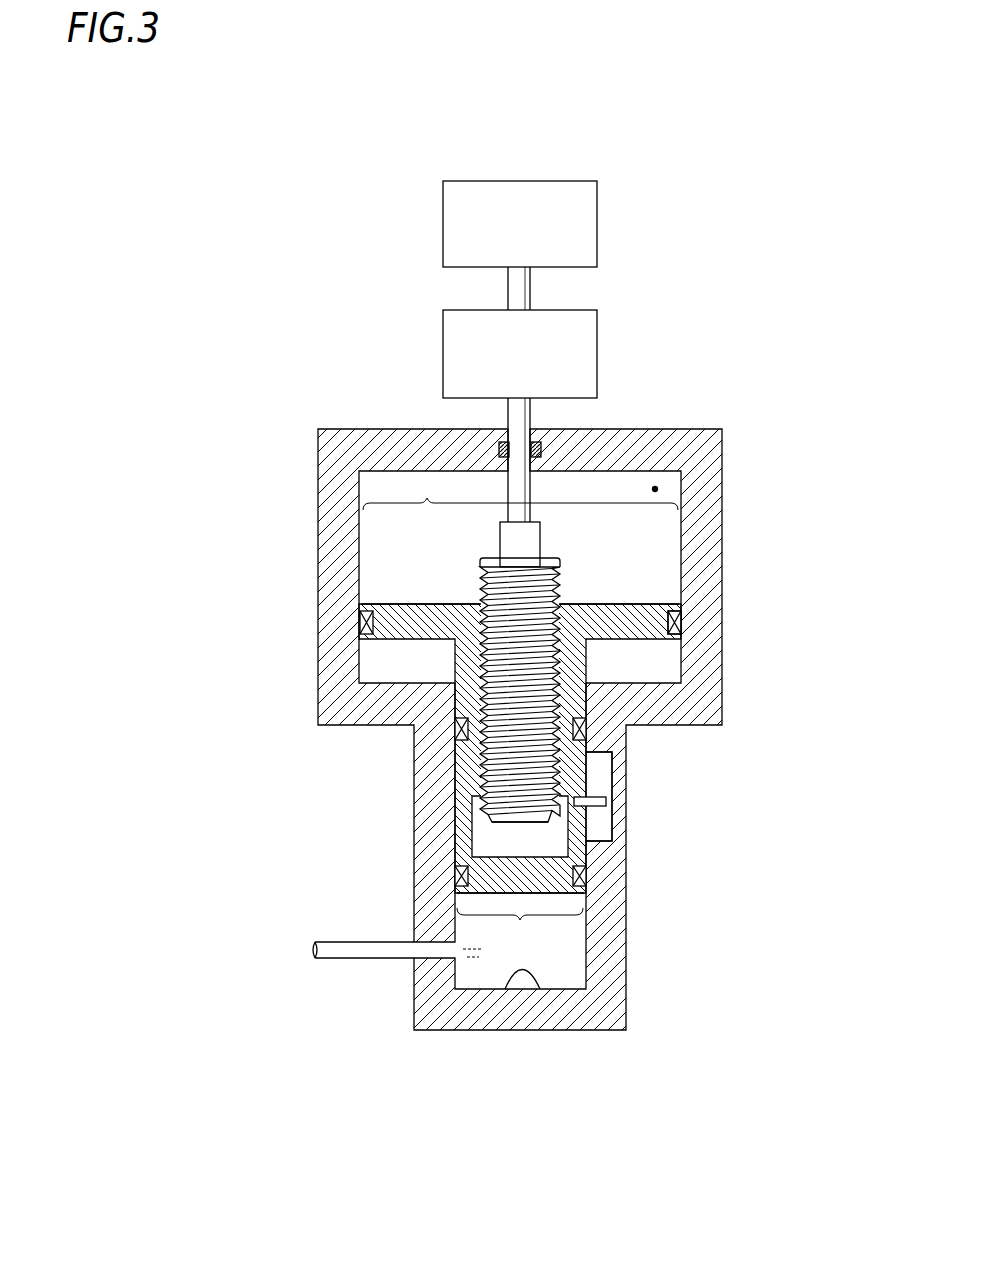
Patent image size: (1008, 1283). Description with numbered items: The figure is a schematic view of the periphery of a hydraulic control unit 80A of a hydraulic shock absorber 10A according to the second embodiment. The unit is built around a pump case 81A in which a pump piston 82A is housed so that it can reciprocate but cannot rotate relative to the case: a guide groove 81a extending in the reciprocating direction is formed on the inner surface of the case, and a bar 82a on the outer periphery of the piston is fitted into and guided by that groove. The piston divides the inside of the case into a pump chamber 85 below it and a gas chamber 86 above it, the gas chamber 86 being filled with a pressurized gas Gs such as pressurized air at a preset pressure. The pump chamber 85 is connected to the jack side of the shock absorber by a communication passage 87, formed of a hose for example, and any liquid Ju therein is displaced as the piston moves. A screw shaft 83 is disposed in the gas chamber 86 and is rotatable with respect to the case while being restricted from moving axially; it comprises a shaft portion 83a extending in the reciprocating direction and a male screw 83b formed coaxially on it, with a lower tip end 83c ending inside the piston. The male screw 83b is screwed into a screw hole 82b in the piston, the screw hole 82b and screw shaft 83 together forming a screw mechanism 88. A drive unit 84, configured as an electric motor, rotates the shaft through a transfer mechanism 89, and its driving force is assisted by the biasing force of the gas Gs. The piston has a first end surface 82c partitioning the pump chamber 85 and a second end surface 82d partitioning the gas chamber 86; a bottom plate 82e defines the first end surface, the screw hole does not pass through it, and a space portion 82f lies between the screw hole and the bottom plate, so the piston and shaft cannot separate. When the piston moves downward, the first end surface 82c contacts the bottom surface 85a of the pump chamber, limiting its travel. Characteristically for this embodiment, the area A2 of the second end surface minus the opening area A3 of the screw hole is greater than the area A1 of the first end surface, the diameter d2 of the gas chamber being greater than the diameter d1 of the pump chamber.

The hydraulic shock absorber 10A is at (205, 160).
The hydraulic control unit 80A is at (624, 196).
The pump case 81A is at (630, 993).
The guide groove 81a is at (604, 818).
The pump piston 82A is at (586, 705).
The bar 82a is at (600, 797).
The screw hole 82b is at (556, 585).
The first end surface 82c is at (570, 896).
The second end surface 82d is at (682, 610).
The bottom plate 82e is at (575, 877).
The space portion 82f is at (550, 853).
The screw shaft 83 is at (543, 532).
The shaft portion 83a is at (517, 488).
The male screw 83b is at (485, 748).
The tip end 83c is at (507, 826).
The drive unit 84 is at (582, 238).
The pump chamber 85 is at (574, 977).
The bottom surface 85a is at (522, 972).
The gas chamber 86 is at (410, 599).
The communication passage 87 is at (335, 950).
The screw mechanism 88 is at (810, 505).
The transfer mechanism 89 is at (588, 342).
The pressurized gas Gs is at (655, 489).
The liquid Ju is at (473, 960).
The area of first end surface A1 is at (518, 943).
The area of second end surface A2 is at (421, 486).
The opening area of screw hole A3 is at (520, 555).
The diameter of first end surface and pump chamber d1 is at (455, 989).
The diameter of second end surface and gas chamber d2 is at (682, 429).